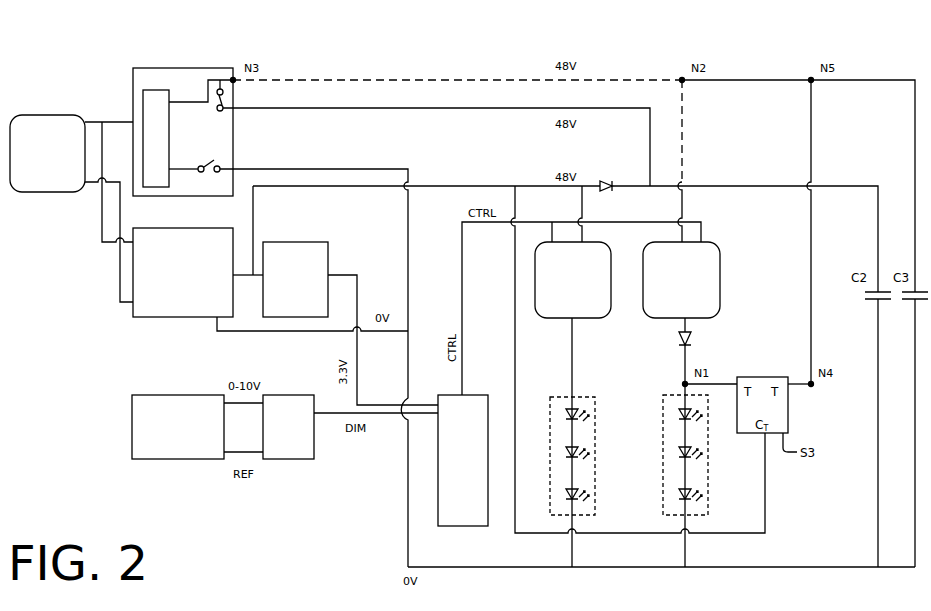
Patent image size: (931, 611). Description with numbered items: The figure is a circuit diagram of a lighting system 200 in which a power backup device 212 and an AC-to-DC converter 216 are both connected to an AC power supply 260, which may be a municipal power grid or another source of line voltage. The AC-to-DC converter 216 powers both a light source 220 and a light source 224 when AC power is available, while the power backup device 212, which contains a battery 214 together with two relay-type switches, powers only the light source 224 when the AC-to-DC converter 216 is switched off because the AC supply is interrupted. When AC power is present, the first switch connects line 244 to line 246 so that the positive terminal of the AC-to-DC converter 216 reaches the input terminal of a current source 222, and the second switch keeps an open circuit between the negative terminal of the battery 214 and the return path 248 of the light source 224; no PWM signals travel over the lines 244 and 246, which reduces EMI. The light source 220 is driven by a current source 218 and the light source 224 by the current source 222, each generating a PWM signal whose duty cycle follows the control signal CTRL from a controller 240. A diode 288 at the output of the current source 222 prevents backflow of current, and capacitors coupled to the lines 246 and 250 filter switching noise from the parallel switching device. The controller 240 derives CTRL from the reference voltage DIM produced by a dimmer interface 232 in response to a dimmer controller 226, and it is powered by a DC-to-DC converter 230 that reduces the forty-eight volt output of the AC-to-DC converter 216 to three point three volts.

The lighting system 200 is at (892, 37).
The power backup device 212 is at (157, 68).
The battery 214 is at (169, 140).
The AC-to-DC converter 216 is at (157, 228).
The current source 218 is at (582, 318).
The light source 220 is at (580, 397).
The current source 222 is at (720, 298).
The light source 224 is at (708, 470).
The dimmer controller 226 is at (147, 395).
The DC-to-DC converter 230 is at (282, 242).
The dimmer interface 232 is at (282, 395).
The controller 240 is at (445, 526).
The line 244 is at (397, 108).
The line 246 is at (397, 80).
The return path 248 is at (607, 567).
The line 250 is at (450, 186).
The AC power supply 260 is at (25, 115).
The diode 288 is at (691, 339).